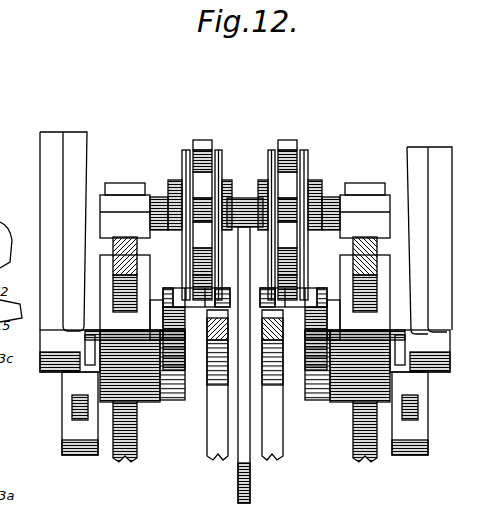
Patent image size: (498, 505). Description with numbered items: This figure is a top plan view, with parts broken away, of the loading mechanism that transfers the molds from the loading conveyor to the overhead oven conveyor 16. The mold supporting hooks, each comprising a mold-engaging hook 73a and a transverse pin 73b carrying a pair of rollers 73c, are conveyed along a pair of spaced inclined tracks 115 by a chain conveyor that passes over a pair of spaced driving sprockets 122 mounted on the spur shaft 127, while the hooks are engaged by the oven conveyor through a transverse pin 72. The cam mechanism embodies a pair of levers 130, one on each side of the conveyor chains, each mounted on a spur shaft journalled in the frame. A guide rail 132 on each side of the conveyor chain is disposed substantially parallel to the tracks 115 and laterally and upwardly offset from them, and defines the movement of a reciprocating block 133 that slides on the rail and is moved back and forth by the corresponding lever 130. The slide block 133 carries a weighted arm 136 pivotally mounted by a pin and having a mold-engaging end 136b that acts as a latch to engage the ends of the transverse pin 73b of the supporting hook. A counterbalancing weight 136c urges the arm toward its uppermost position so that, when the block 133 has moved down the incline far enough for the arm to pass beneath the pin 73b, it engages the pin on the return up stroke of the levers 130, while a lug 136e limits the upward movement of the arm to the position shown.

The lever 130 is at (63, 133).
The oven conveyor 16 is at (190, 150).
The driving sprocket 122 is at (180, 165).
The spur shaft 127 is at (338, 190).
The reciprocating block 133 is at (112, 240).
The mold-engaging end 136b is at (150, 316).
The roller 73c is at (192, 276).
The transverse pin 72 is at (170, 298).
The transverse pin 73b is at (320, 300).
The lug 136e is at (70, 375).
The weighted arm 136 is at (70, 410).
The counterbalancing weight 136c is at (72, 457).
The guide rail 132 is at (126, 463).
The track 115 is at (212, 461).
The mold-engaging hook 73a is at (251, 485).